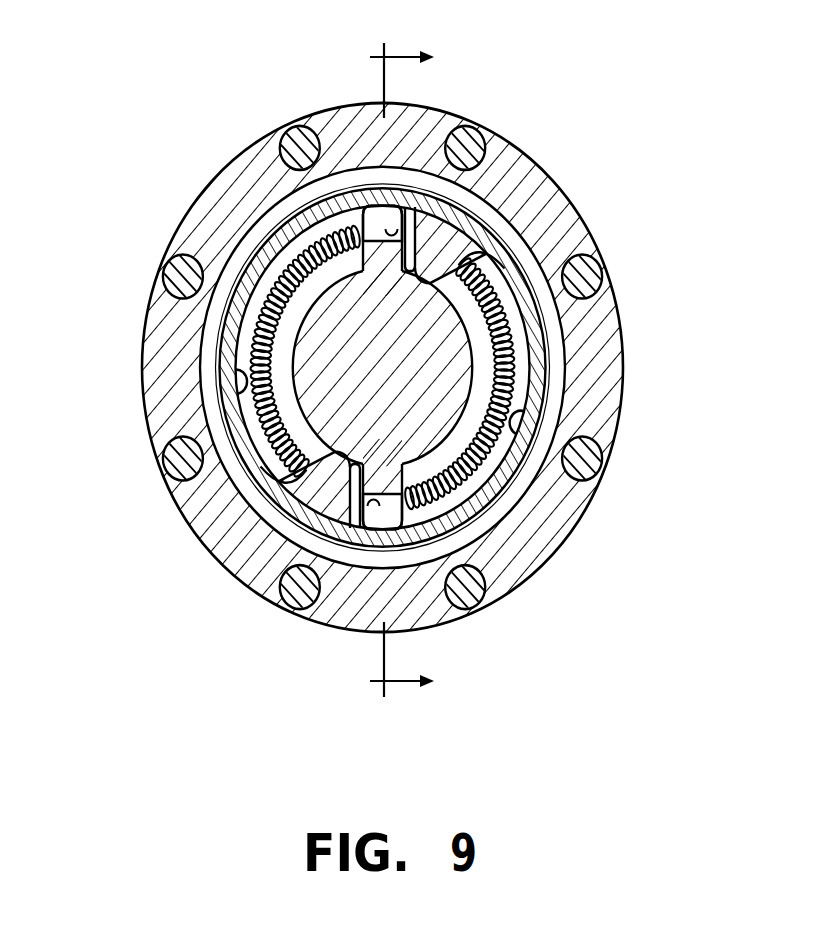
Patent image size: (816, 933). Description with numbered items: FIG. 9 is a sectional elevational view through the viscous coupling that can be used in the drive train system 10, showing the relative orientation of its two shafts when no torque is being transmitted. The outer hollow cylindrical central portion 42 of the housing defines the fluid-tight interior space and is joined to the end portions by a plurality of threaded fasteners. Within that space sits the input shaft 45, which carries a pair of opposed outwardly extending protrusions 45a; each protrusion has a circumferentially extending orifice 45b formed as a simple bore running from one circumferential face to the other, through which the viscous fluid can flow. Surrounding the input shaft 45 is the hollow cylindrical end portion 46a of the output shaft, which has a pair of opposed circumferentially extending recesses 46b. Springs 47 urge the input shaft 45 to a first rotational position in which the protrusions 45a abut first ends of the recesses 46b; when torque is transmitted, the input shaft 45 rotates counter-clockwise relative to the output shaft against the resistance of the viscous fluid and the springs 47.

The drive train system 10 is at (385, 374).
The central portion 42 is at (580, 497).
The input shaft 45 is at (433, 357).
The outwardly extending protrusions 45a is at (380, 210).
The orifices 45b is at (406, 208).
The hollow cylindrical end portion 46a is at (430, 285).
The circumferentially extending recesses 46b is at (243, 376).
The springs 47 is at (287, 272).